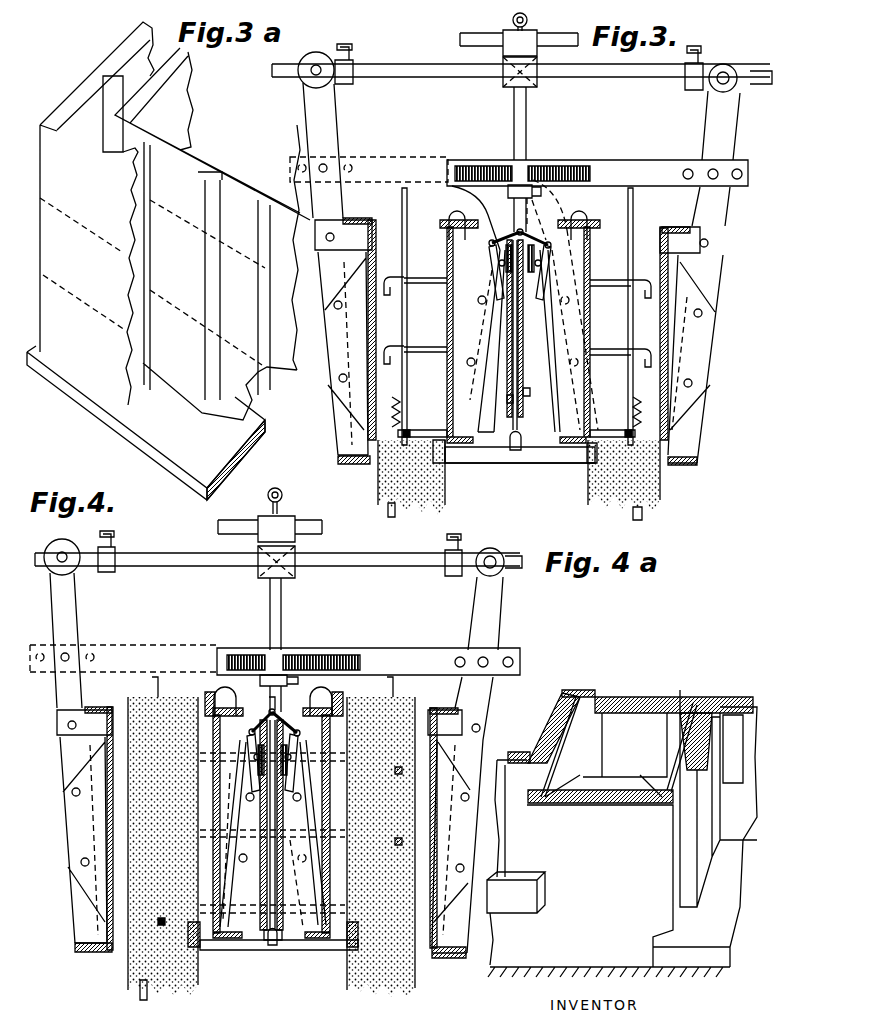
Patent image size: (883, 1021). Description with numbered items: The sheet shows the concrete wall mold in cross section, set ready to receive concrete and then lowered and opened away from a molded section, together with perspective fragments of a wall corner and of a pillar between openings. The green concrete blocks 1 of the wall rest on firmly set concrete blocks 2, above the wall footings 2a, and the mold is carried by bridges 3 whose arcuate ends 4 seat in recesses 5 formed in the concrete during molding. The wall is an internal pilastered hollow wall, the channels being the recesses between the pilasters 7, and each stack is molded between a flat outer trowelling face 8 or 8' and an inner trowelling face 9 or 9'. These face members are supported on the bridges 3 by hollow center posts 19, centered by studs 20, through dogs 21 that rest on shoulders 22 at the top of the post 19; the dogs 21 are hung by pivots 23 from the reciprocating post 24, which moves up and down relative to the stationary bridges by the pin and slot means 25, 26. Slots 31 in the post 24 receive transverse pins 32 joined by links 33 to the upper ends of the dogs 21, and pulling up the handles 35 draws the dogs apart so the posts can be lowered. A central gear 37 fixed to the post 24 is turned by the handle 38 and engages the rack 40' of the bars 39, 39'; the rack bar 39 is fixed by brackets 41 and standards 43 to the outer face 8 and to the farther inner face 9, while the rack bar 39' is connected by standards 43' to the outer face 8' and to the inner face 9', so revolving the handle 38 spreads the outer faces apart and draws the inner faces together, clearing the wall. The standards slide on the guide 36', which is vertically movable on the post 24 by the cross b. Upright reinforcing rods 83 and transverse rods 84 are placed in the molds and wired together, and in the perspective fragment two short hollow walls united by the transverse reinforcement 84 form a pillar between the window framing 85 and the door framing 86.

In FIG. 3A, the concrete blocks 1 is at (97, 213).
In FIG. 4, the concrete blocks 1 is at (133, 702).
In FIG. 4A, the concrete blocks 1 is at (622, 828).
In FIG. 3, the concrete blocks 2 is at (378, 479).
In FIG. 4, the concrete blocks 2 is at (128, 975).
In FIG. 3A, the wall footings 2a is at (100, 408).
In FIG. 4A, the wall footings 2a is at (700, 975).
In FIG. 3, the bridges 3 is at (497, 463).
In FIG. 4, the bridges 3 is at (302, 950).
In FIG. 3, the arcuate ends 4 is at (445, 463).
In FIG. 4, the arcuate ends 4 is at (345, 945).
In FIG. 3, the recesses 5 is at (515, 516).
In FIG. 4, the recesses 5 is at (203, 700).
In FIG. 3A, the pilasters 7 is at (122, 158).
In FIG. 3, the outer trowelling face 8 is at (378, 330).
In FIG. 4, the outer trowelling face 8 is at (104, 817).
In FIG. 3, the outer trowelling face 8' is at (654, 334).
In FIG. 4, the outer trowelling face 8' is at (442, 815).
In FIG. 3, the inner trowelling face 9 is at (515, 327).
In FIG. 4, the inner trowelling face 9 is at (272, 812).
In FIG. 3A, the inner trowelling face 9' is at (212, 234).
In FIG. 3, the hollow center posts 19 is at (505, 318).
In FIG. 4, the hollow center posts 19 is at (264, 942).
In FIG. 3, the studs 20 is at (512, 453).
In FIG. 4, the studs 20 is at (270, 950).
In FIG. 3, the dogs 21 is at (540, 262).
In FIG. 4, the dogs 21 is at (292, 775).
In FIG. 3, the shoulders 22 is at (534, 300).
In FIG. 4, the shoulders 22 is at (252, 770).
In FIG. 3, the pivots 23 is at (501, 257).
In FIG. 3, the reciprocating post 24 is at (512, 128).
In FIG. 4, the reciprocating post 24 is at (282, 605).
In FIG. 3, the pin and slot means 25 is at (527, 396).
In FIG. 3, the pin and slot means 26 is at (511, 401).
In FIG. 3, the slots 31 is at (530, 222).
In FIG. 3, the transverse pins 32 is at (518, 229).
In FIG. 3, the links 33 is at (531, 238).
In FIG. 3, the handles 35 is at (512, 21).
In FIG. 4, the handles 35 is at (282, 492).
In FIG. 3, the guide 36' is at (521, 87).
In FIG. 4, the guide 36' is at (277, 550).
In FIG. 3, the central gears 37 is at (540, 166).
In FIG. 4, the central gears 37 is at (262, 656).
In FIG. 3, the handles 38 is at (460, 39).
In FIG. 4, the handles 38 is at (218, 527).
In FIG. 3, the rack bar 39 is at (369, 159).
In FIG. 3, the rack bar 39' is at (597, 160).
In FIG. 4, the rack bar 39' is at (368, 647).
In FIG. 3, the rack 40' is at (561, 158).
In FIG. 4, the rack 40' is at (321, 647).
In FIG. 3, the brackets 41 is at (335, 230).
In FIG. 4, the brackets 41 is at (60, 718).
In FIG. 3, the standards 43 is at (319, 258).
In FIG. 4, the standards 43 is at (78, 745).
In FIG. 3, the standards 43' is at (703, 264).
In FIG. 4, the standards 43' is at (487, 753).
In FIG. 3, the upright reinforcing steel rods 83 is at (404, 380).
In FIG. 4, the upright reinforcing steel rods 83 is at (392, 700).
In FIG. 3, the transverse reinforcing steel rods 84 is at (420, 278).
In FIG. 4A, the transverse reinforcing steel rods 84 is at (667, 748).
In FIG. 4A, the window framing 85 is at (545, 738).
In FIG. 4A, the door framing 86 is at (703, 712).
In FIG. 3, the cross b is at (503, 86).
In FIG. 4, the cross b is at (260, 575).